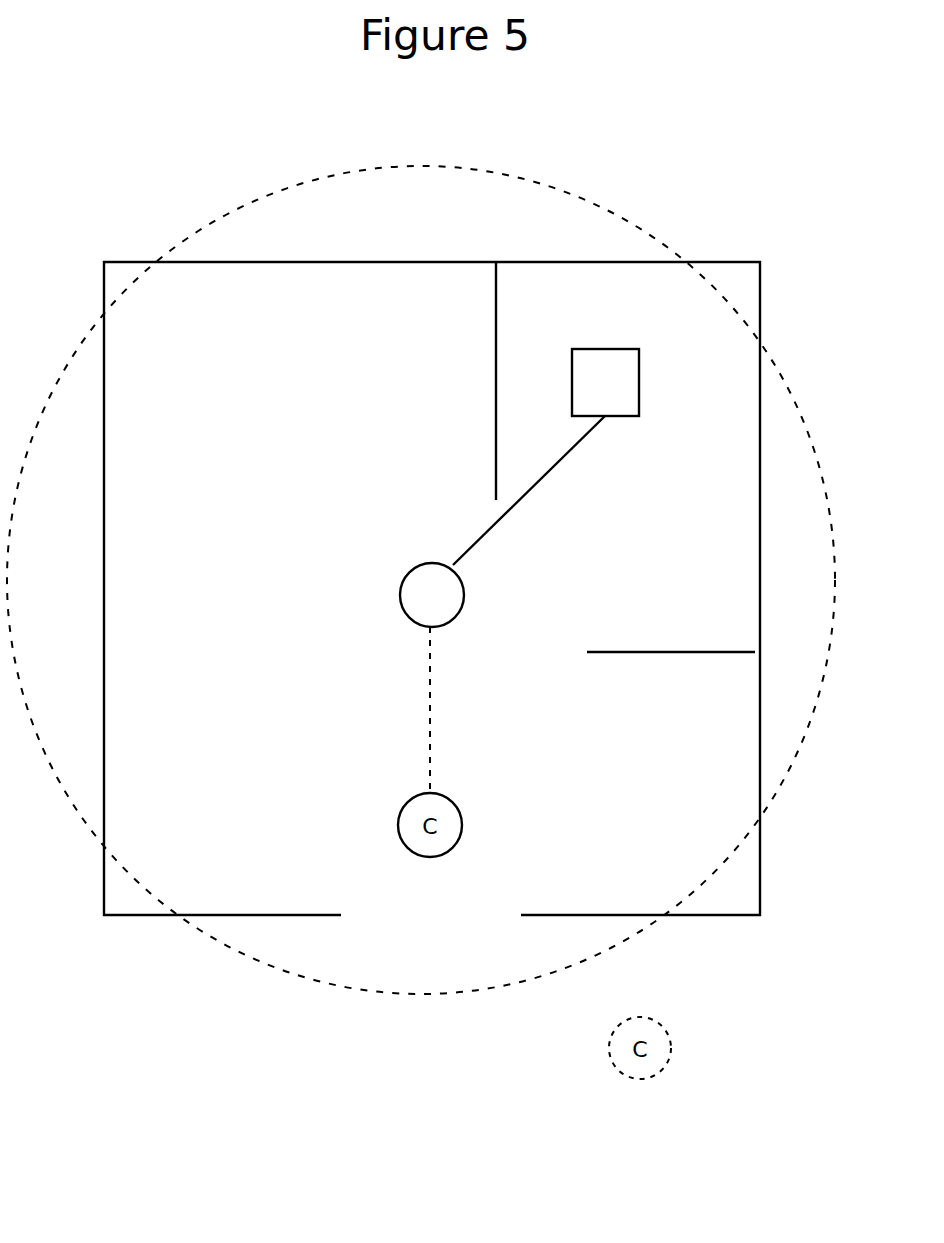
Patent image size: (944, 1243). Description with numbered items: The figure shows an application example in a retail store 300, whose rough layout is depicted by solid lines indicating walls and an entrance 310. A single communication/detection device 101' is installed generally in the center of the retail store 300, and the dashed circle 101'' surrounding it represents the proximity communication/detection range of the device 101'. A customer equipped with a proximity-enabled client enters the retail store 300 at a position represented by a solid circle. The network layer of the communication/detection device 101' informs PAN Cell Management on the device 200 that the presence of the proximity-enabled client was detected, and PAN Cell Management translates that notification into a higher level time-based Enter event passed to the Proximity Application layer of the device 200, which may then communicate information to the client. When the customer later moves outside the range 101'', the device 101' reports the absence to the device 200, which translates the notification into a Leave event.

The proximity communication/detection range 101'' is at (421, 580).
The retail store 300 is at (192, 335).
The device 200 is at (622, 395).
The communication/detection device 101' is at (432, 677).
The entrance 310 is at (375, 920).